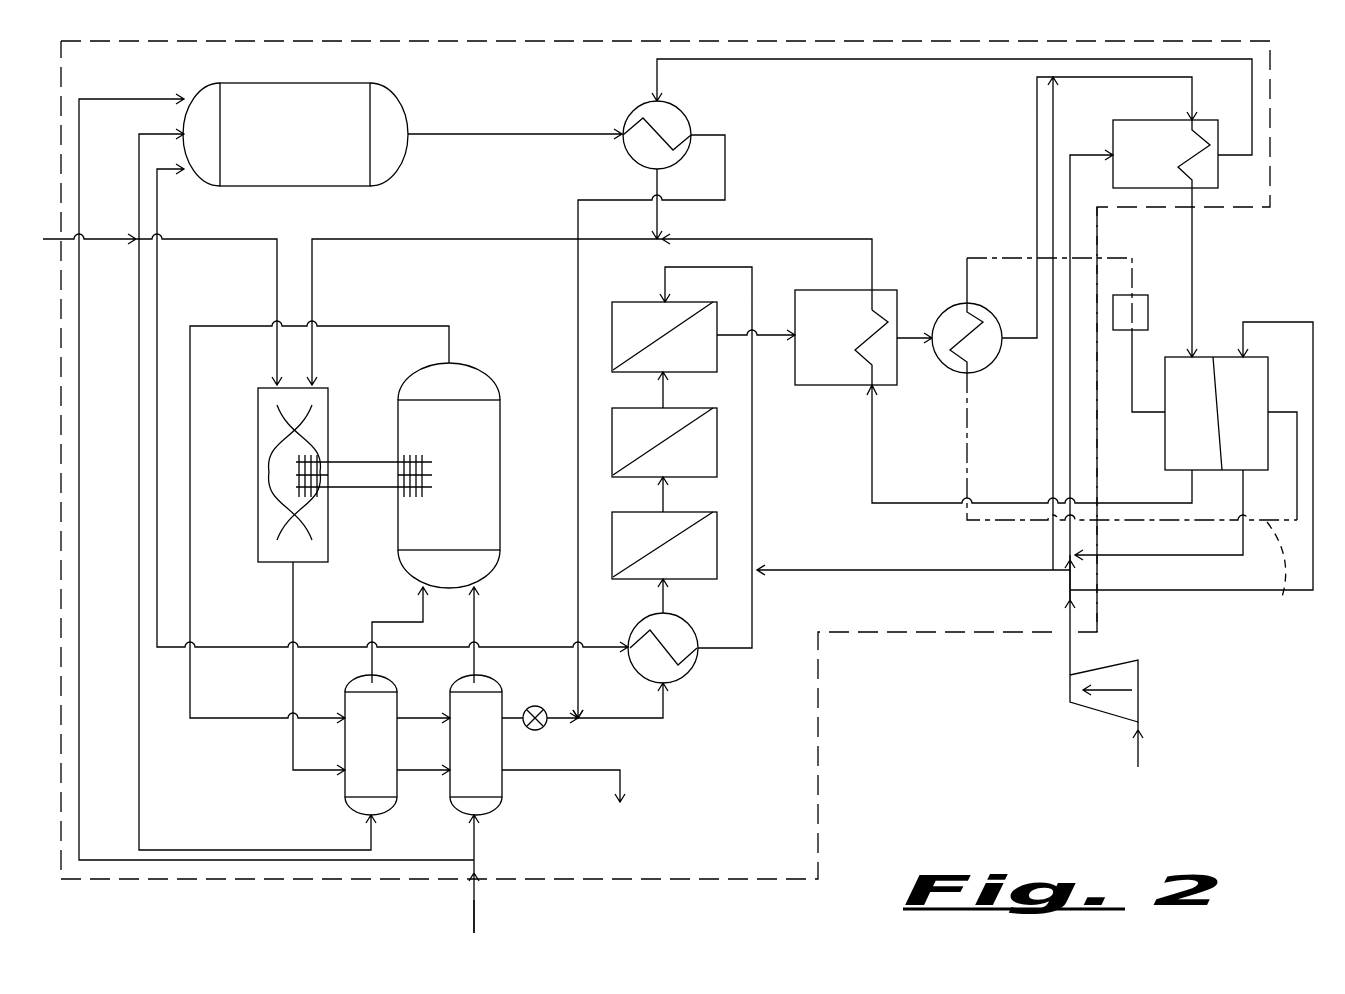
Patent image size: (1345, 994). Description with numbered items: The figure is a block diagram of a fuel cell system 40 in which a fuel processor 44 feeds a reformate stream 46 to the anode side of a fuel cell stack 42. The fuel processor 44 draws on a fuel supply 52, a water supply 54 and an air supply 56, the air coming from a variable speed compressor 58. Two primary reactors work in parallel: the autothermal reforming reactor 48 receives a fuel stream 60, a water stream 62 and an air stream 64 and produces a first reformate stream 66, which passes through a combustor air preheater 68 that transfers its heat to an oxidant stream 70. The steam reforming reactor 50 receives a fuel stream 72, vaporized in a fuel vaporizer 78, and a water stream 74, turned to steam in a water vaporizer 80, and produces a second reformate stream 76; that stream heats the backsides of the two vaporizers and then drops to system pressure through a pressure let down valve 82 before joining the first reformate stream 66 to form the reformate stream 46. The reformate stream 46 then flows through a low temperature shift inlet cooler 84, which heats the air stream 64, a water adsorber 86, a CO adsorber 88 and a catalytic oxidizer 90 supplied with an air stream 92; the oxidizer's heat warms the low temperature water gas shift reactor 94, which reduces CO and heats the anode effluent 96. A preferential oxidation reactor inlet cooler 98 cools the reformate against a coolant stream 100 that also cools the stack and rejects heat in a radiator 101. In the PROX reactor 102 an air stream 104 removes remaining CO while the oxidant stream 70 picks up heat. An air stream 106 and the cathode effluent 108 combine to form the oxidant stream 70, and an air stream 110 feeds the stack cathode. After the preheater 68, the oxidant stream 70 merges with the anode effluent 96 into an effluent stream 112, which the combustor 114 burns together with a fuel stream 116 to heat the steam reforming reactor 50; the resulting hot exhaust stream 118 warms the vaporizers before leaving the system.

The fuel cell system 40 is at (1302, 142).
The fuel cell stack 42 is at (1263, 368).
The fuel processor 44 is at (875, 632).
The reformate stream 46 is at (650, 720).
The autothermal reforming (ATR) reactor 48 is at (360, 100).
The steam reforming (SR) reactor 50 is at (487, 410).
The fuel supply 52 is at (100, 238).
The water supply 54 is at (474, 892).
The air supply 56 is at (1070, 655).
The variable speed compressor 58 is at (1090, 708).
The fuel stream 60 is at (139, 172).
The water stream 62 is at (122, 99).
The air stream 64 is at (158, 207).
The first reformate stream 66 is at (457, 138).
The combustor air preheater 68 is at (680, 125).
The oxidant stream 70 is at (863, 60).
The fuel stream 72 is at (393, 622).
The water stream 74 is at (477, 613).
The second reformate stream 76 is at (358, 325).
The fuel vaporizer 78 is at (362, 800).
The water vaporizer 80 is at (452, 702).
The pressure let down valve 82 is at (537, 706).
The low temperature shift inlet cooler 84 is at (638, 628).
The water adsorber 86 is at (705, 533).
The CO adsorber 88 is at (705, 438).
The catalytic oxidizer 90 is at (623, 303).
The air stream 92 is at (752, 283).
The low temperature water gas shift (WGS) reactor 94 is at (888, 295).
The anode effluent 96 is at (870, 473).
The preferential oxidation reactor inlet cooler 98 is at (946, 365).
The coolant stream 100 is at (1142, 444).
The radiator 101 is at (1142, 302).
The preferential oxidation (PROX) reactor 102 is at (1127, 130).
The air stream 104 is at (1053, 133).
The air stream 106 is at (1072, 580).
The cathode effluent 108 is at (1182, 554).
The air stream 110 is at (1213, 592).
The effluent stream 112 is at (480, 240).
The combustor 114 is at (268, 402).
The fuel stream 116 is at (278, 283).
The hot exhaust stream 118 is at (293, 612).